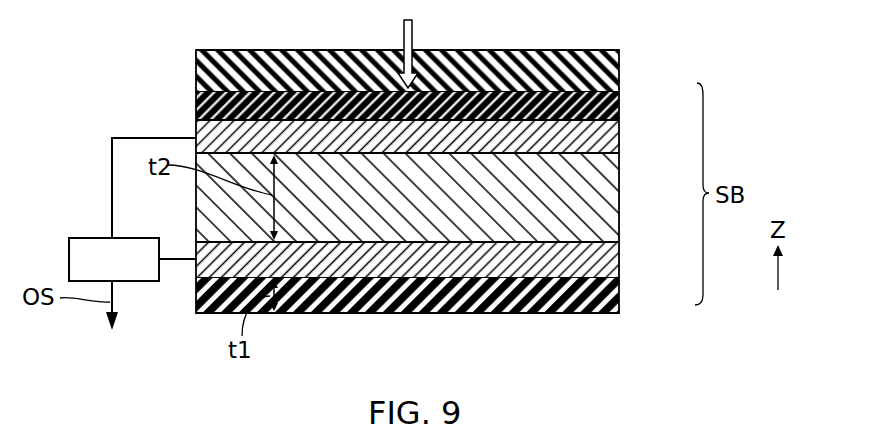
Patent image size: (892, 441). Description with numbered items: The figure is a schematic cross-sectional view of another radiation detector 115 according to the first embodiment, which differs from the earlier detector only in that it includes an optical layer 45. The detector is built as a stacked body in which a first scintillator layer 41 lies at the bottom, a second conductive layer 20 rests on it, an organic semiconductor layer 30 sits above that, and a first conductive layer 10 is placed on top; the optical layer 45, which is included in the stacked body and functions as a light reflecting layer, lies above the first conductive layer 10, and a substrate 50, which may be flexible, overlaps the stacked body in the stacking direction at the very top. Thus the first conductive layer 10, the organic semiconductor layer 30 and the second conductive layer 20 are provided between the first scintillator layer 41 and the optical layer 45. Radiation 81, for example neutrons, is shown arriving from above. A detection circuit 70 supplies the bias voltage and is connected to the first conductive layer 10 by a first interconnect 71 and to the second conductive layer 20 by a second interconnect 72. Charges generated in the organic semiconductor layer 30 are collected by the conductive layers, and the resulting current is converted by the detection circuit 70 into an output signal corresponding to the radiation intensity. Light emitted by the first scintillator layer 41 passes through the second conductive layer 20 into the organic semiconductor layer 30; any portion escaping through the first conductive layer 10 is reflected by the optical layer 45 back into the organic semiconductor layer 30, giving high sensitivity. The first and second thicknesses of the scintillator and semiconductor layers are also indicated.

The first conductive layer 10 is at (598, 138).
The second conductive layer 20 is at (598, 258).
The organic semiconductor layer 30 is at (598, 200).
The first scintillator layer 41 is at (598, 295).
The optical layer 45 is at (598, 108).
The substrate 50 is at (598, 70).
The detection circuit 70 is at (90, 238).
The first interconnect 71 is at (112, 157).
The second interconnect 72 is at (177, 261).
The radiation 81 is at (413, 34).
The radiation detector 115 is at (733, 78).